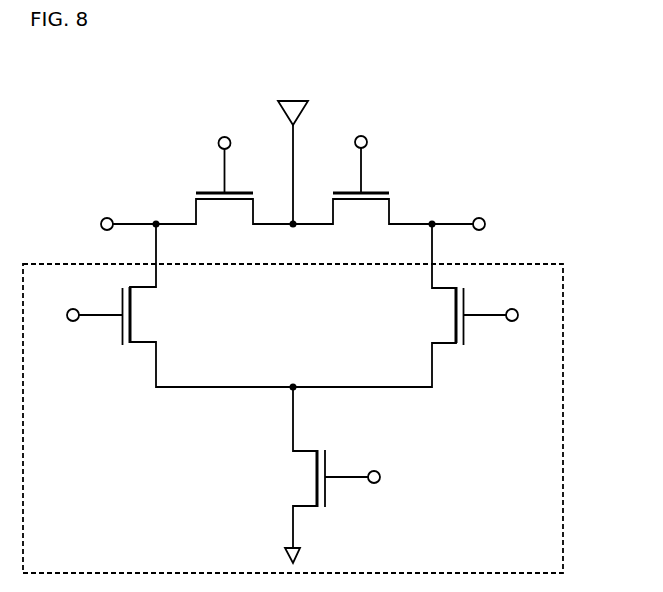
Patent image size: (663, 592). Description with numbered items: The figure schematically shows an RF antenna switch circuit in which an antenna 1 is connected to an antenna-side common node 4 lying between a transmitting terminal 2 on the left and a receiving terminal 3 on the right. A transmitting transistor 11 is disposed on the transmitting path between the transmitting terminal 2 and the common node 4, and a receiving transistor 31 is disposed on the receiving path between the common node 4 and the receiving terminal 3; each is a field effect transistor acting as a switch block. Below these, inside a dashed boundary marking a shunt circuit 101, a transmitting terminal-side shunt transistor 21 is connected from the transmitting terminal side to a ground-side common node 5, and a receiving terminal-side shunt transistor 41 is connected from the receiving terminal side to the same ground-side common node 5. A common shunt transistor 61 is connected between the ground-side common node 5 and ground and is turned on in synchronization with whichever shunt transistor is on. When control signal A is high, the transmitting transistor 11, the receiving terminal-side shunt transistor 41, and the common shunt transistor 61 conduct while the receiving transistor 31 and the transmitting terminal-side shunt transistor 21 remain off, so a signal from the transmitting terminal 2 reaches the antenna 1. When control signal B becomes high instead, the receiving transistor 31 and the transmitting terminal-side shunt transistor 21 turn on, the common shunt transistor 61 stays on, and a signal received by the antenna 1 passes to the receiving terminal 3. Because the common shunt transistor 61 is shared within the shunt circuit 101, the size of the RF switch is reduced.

The antenna 1 is at (305, 112).
The transmitting terminal 2 is at (108, 216).
The receiving terminal 3 is at (480, 218).
The antenna-side common node 4 is at (295, 228).
The ground-side common node 5 is at (290, 390).
The transmitting transistor 11 is at (210, 187).
The receiving transistor 31 is at (377, 187).
The transmitting terminal-side shunt transistor 21 is at (152, 316).
The receiving terminal-side shunt transistor 41 is at (438, 317).
The common shunt transistor 61 is at (298, 478).
The shunt circuit 101 is at (563, 422).